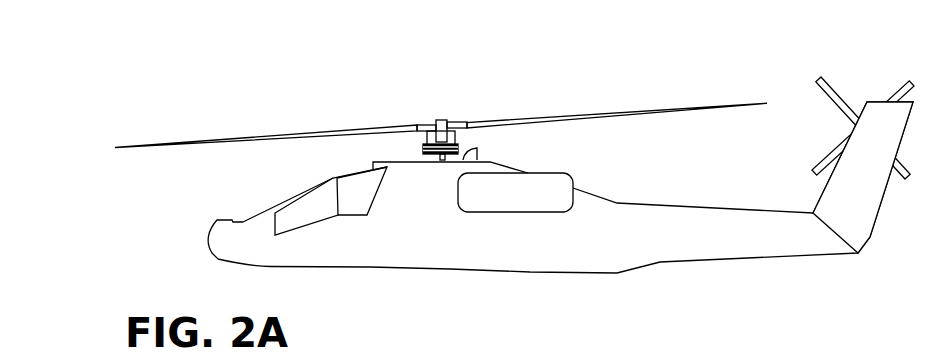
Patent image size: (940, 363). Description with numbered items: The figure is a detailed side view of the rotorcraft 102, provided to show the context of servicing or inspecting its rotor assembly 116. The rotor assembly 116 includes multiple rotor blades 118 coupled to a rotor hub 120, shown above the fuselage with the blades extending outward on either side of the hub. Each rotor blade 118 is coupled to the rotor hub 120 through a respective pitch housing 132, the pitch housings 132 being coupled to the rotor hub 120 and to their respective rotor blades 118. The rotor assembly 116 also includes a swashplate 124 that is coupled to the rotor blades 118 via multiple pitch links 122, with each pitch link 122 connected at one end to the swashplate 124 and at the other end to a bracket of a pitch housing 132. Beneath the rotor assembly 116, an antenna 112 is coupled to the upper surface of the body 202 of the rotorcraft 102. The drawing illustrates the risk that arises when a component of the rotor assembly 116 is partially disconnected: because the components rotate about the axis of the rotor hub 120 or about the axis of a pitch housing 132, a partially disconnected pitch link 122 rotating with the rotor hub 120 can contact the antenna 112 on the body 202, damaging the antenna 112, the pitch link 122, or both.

The rotorcraft 102 is at (180, 88).
The rotor assembly 116 is at (441, 128).
The rotor blades 118 is at (240, 138).
The rotor hub 120 is at (443, 120).
The pitch housings 132 is at (434, 124).
The pitch links 122 is at (427, 134).
The swashplate 124 is at (438, 158).
The antenna 112 is at (478, 149).
The body 202 is at (233, 221).